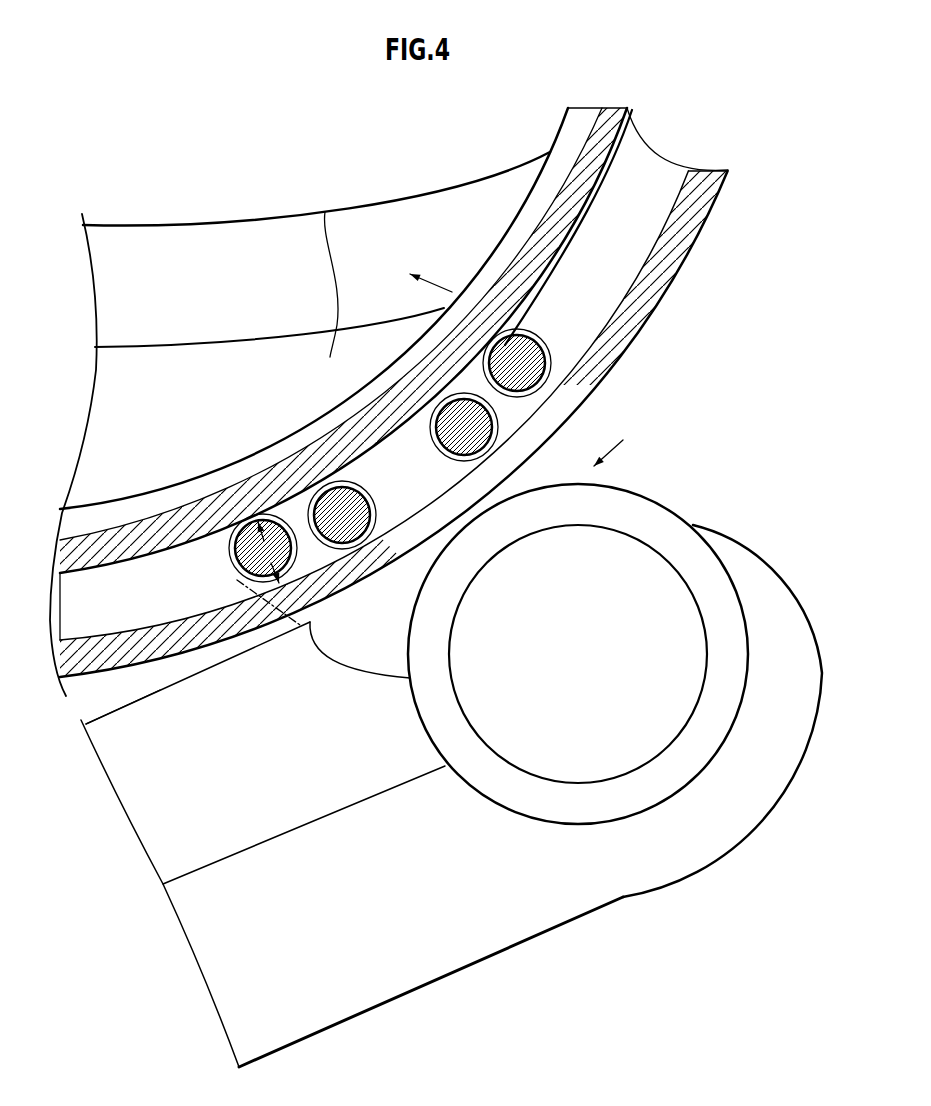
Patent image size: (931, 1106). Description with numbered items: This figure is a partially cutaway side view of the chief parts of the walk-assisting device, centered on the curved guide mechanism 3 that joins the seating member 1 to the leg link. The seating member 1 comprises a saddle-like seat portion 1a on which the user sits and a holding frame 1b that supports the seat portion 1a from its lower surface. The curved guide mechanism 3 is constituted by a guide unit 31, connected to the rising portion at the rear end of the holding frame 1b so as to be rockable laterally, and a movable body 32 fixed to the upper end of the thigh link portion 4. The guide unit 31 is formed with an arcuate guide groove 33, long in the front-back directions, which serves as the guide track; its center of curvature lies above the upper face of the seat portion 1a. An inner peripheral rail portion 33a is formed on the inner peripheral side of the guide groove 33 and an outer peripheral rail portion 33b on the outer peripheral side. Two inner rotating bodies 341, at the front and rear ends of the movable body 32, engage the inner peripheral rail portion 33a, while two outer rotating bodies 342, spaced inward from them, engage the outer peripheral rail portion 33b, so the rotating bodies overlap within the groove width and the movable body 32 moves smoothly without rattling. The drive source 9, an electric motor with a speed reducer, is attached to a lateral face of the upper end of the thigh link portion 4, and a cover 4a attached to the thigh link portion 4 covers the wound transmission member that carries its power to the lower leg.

The seating member 1 is at (300, 415).
The seat portion 1a is at (157, 224).
The holding frame 1b is at (325, 212).
The curved guide mechanism 3 is at (412, 392).
The guide unit 31 is at (667, 293).
The movable body 32 is at (330, 468).
The guide groove 33 is at (412, 375).
The inner peripheral rail portion 33a is at (407, 432).
The outer peripheral rail portion 33b is at (593, 330).
The inner rotating body 341 is at (633, 373).
The outer rotating body 342 is at (347, 519).
The thigh link portion 4 is at (441, 775).
The cover 4a is at (154, 767).
The drive source 9 is at (660, 584).